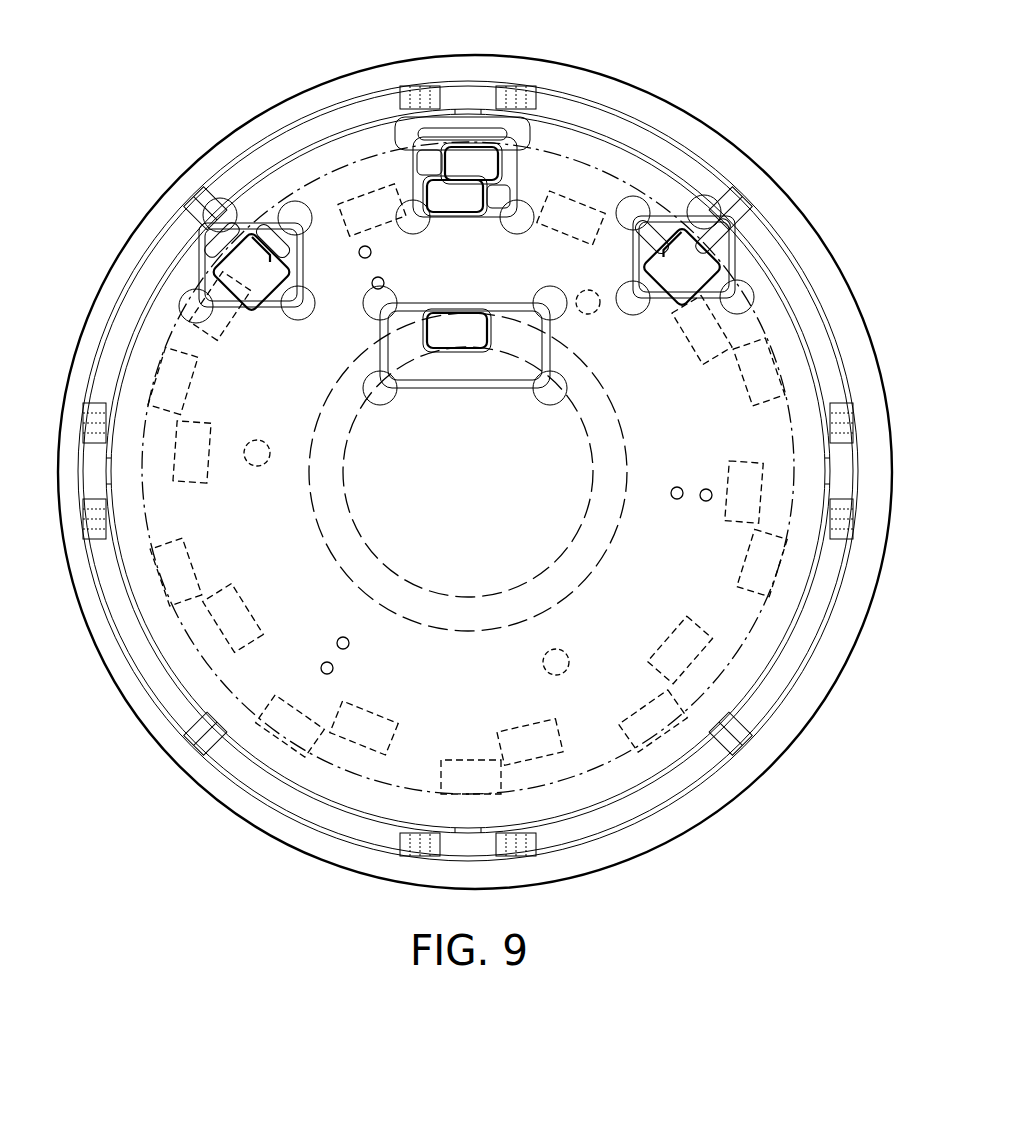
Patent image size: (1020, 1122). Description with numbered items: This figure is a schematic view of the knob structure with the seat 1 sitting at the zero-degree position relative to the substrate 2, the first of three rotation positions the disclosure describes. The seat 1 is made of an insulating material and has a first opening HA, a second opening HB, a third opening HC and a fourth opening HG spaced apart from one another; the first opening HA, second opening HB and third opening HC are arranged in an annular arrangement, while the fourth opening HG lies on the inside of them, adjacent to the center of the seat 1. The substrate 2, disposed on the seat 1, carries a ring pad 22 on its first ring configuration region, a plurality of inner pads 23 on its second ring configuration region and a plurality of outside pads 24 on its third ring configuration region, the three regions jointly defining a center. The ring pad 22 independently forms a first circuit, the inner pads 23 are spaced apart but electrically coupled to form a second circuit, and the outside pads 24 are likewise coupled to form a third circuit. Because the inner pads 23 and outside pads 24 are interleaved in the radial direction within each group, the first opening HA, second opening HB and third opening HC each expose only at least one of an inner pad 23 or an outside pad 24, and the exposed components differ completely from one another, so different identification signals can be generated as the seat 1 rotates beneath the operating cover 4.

The seat 1 is at (164, 659).
The substrate 2 is at (353, 770).
The operating cover 4 is at (172, 188).
The ring pad 22 is at (465, 332).
The inner pads 23 is at (382, 205).
The outside pads 24 is at (262, 272).
The first opening HA is at (229, 276).
The second opening HB is at (498, 167).
The third opening HC is at (700, 275).
The fourth opening HG is at (446, 348).